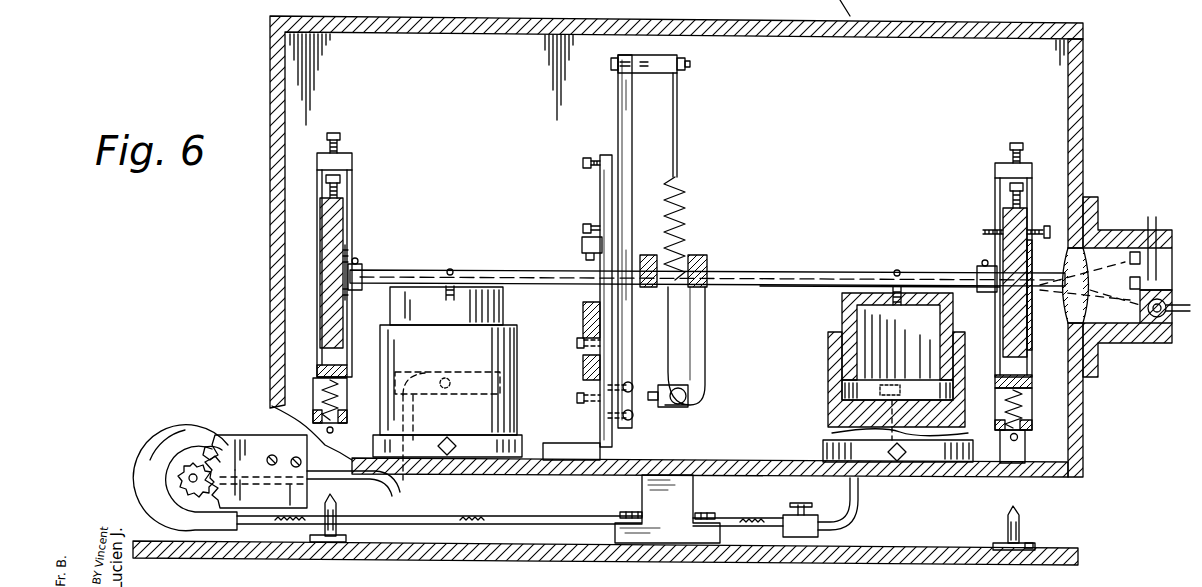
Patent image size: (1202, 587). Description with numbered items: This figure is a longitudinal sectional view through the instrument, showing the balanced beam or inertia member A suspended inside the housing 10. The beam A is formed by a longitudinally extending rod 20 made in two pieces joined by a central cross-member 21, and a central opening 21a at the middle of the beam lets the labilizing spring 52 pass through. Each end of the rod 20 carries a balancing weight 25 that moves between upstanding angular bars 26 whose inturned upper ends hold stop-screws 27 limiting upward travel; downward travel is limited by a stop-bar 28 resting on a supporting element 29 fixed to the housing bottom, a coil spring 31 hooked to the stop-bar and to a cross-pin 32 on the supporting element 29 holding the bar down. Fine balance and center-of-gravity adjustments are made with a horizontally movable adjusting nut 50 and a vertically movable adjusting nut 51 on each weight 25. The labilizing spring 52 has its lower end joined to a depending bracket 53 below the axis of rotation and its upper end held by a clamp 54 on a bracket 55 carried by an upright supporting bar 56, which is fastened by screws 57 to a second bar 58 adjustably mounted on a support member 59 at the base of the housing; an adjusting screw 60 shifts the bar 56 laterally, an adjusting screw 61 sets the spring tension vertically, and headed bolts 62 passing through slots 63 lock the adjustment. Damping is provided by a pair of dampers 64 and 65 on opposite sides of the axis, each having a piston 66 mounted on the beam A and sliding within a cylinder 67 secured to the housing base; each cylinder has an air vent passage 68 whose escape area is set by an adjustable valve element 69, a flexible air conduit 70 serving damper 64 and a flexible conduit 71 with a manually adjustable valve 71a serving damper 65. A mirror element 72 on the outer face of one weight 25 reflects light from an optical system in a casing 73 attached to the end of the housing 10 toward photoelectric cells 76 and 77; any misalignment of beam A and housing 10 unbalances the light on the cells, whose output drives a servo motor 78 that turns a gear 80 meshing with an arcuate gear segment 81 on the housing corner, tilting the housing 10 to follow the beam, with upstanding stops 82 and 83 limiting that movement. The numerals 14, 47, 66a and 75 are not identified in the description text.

The housing 10 is at (718, 458).
The photoelectric cell 14 is at (1165, 303).
The rod 20 is at (822, 271).
The cross-member 21 is at (707, 269).
The central opening 21a is at (697, 256).
The balancing weight 25 is at (345, 212).
The angular bars 26 is at (352, 184).
The stop-screw 27 is at (341, 137).
The stop-bar 28 is at (340, 368).
The supporting element 29 is at (340, 425).
The coil spring 31 is at (335, 400).
The cross-pin 32 is at (1018, 438).
The base plate 47 is at (775, 558).
The horizontally movable adjusting nut 50 is at (1048, 225).
The vertically movable adjusting nut 51 is at (327, 180).
The labilizing spring 52 is at (680, 185).
The depending bracket 53 is at (705, 335).
The clamp 54 is at (690, 68).
The bracket 55 is at (660, 75).
The upright supporting bar 56 is at (618, 110).
The screws 57 is at (632, 387).
The second bar 58 is at (602, 183).
The support member 59 is at (585, 305).
The adjusting screw 60 is at (588, 158).
The adjusting screw 61 is at (585, 228).
The headed bolts 62 is at (580, 343).
The slots 63 is at (583, 366).
The damper 64 is at (523, 362).
The damper 65 is at (822, 346).
The piston 66 is at (842, 306).
The bearing pin 66a is at (450, 269).
The cylinder 67 is at (830, 381).
The air vent passage 68 is at (905, 395).
The adjustable valve element 69 is at (897, 463).
The flexible air conduit 70 is at (405, 487).
The flexible conduit 71 is at (515, 517).
The manually adjustable valve 71a is at (783, 516).
The mirror element 72 is at (1030, 270).
The casing 73 is at (1118, 345).
The lens 75 is at (1065, 300).
The photoelectric cell 76 is at (1130, 283).
The photoelectric cell 77 is at (1130, 252).
The servo motor 78 is at (183, 475).
The gear 80 is at (215, 490).
The arcuate gear segment 81 is at (236, 470).
The stop 82 is at (338, 505).
The stop 83 is at (1020, 515).
The beam A is at (782, 271).